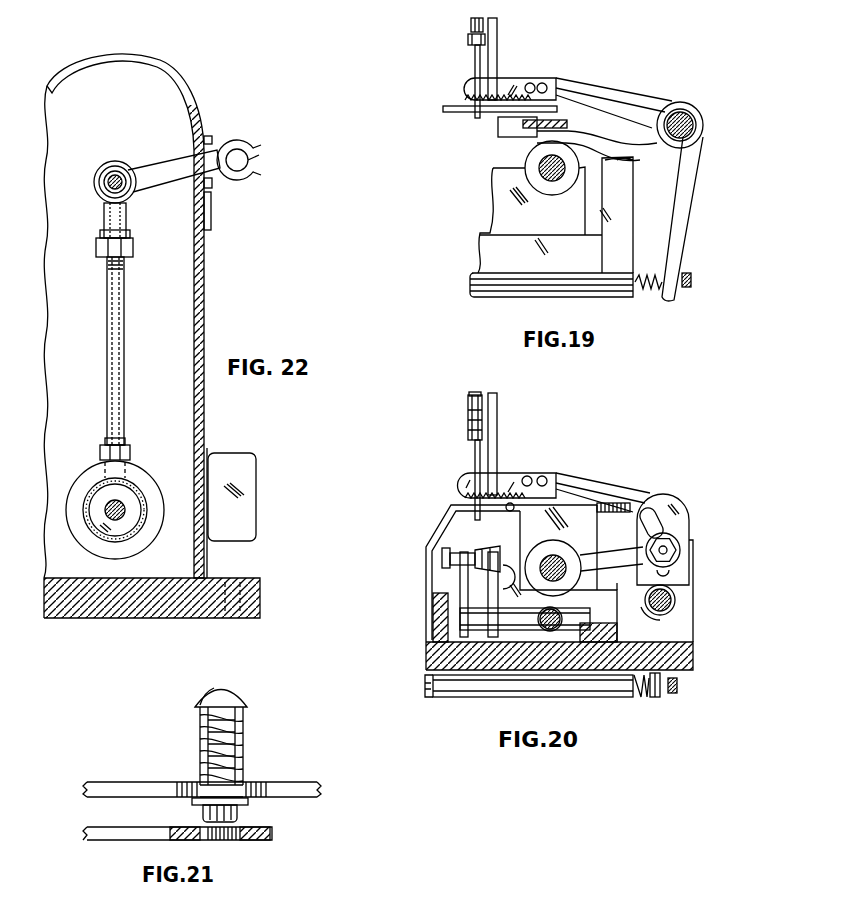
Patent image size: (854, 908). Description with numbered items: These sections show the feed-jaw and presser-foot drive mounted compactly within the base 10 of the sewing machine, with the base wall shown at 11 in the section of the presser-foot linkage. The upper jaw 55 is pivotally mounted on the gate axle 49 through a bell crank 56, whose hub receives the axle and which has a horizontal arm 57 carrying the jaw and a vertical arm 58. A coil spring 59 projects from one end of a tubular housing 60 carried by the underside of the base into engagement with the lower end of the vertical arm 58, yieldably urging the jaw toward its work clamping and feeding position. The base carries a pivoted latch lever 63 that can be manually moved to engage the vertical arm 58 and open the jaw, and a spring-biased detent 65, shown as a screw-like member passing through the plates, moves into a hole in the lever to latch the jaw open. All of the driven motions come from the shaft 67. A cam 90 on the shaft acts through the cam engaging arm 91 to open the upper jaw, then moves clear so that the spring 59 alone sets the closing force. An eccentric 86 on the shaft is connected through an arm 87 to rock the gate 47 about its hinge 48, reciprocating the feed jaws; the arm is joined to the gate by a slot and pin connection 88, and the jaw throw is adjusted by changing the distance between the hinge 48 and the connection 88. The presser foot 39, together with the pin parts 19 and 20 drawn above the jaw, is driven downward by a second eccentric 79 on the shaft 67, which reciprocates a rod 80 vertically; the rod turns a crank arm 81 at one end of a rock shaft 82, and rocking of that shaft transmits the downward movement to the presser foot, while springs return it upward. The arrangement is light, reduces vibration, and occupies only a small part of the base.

In FIG. 19, the base 10 is at (570, 257).
In FIG. 20, the base 10 is at (690, 655).
In FIG. 22, the wall of housing 11 is at (200, 300).
In FIG. 19, the pin rod 19 is at (474, 62).
In FIG. 20, the pin rod 19 is at (474, 456).
In FIG. 19, the pin head 20 is at (469, 25).
In FIG. 20, the pin head 20 is at (467, 403).
In FIG. 19, the presser foot 39 is at (496, 53).
In FIG. 20, the presser foot 39 is at (496, 441).
In FIG. 20, the gate 47 is at (676, 526).
In FIG. 20, the hinge 48 is at (676, 601).
In FIG. 19, the gate axle 49 is at (693, 128).
In FIG. 19, the upper jaw 55 is at (492, 98).
In FIG. 20, the upper jaw 55 is at (515, 490).
In FIG. 19, the bell crank 56 is at (697, 112).
In FIG. 19, the horizontal arm 57 is at (598, 88).
In FIG. 20, the horizontal arm 57 is at (592, 485).
In FIG. 19, the vertical arm 58 is at (680, 217).
In FIG. 20, the vertical arm 58 is at (657, 698).
In FIG. 19, the coil spring 59 is at (650, 292).
In FIG. 20, the coil spring 59 is at (641, 698).
In FIG. 19, the tubular housing 60 is at (497, 288).
In FIG. 20, the tubular housing 60 is at (465, 691).
In FIG. 19, the latch lever 63 is at (691, 280).
In FIG. 20, the latch lever 63 is at (679, 689).
In FIG. 21, the latch lever 63 is at (260, 841).
In FIG. 21, the detent 65 is at (237, 700).
In FIG. 22, the shaft 67 is at (125, 502).
In FIG. 19, the shaft 67 is at (555, 180).
In FIG. 20, the shaft 67 is at (565, 578).
In FIG. 22, the eccentric 79 is at (130, 522).
In FIG. 22, the rod 80 is at (117, 310).
In FIG. 22, the crank arm 81 is at (172, 176).
In FIG. 22, the rock shaft 82 is at (240, 165).
In FIG. 20, the eccentric 86 is at (560, 553).
In FIG. 20, the arm 87 is at (605, 559).
In FIG. 20, the slot and pin connection 88 is at (681, 553).
In FIG. 19, the cam 90 is at (536, 158).
In FIG. 19, the cam engaging arm 91 is at (600, 152).